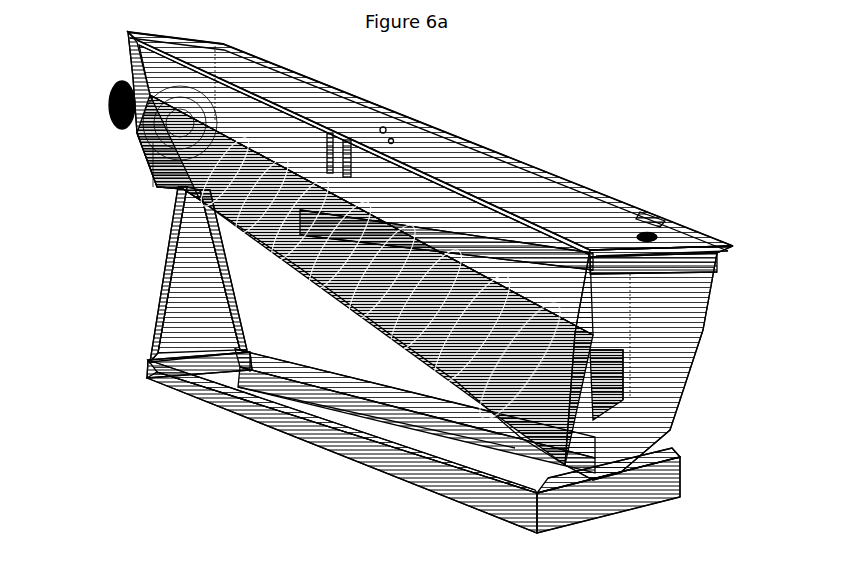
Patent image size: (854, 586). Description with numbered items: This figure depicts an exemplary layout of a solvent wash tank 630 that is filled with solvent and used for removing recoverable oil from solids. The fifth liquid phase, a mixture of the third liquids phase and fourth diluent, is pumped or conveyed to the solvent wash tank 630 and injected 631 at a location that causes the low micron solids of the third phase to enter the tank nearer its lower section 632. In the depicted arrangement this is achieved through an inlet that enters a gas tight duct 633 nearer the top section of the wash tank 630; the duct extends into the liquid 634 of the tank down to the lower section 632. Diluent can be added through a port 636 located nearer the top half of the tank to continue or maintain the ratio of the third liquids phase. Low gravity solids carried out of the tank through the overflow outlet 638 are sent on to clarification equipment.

The solvent wash tank 630 is at (102, 205).
The injection 631 is at (650, 220).
The lower section of the wash tank 632 is at (640, 434).
The gas tight duct 633 is at (656, 239).
The liquid 634 is at (507, 250).
The port 636 is at (379, 175).
The overflow outlet 638 is at (630, 270).